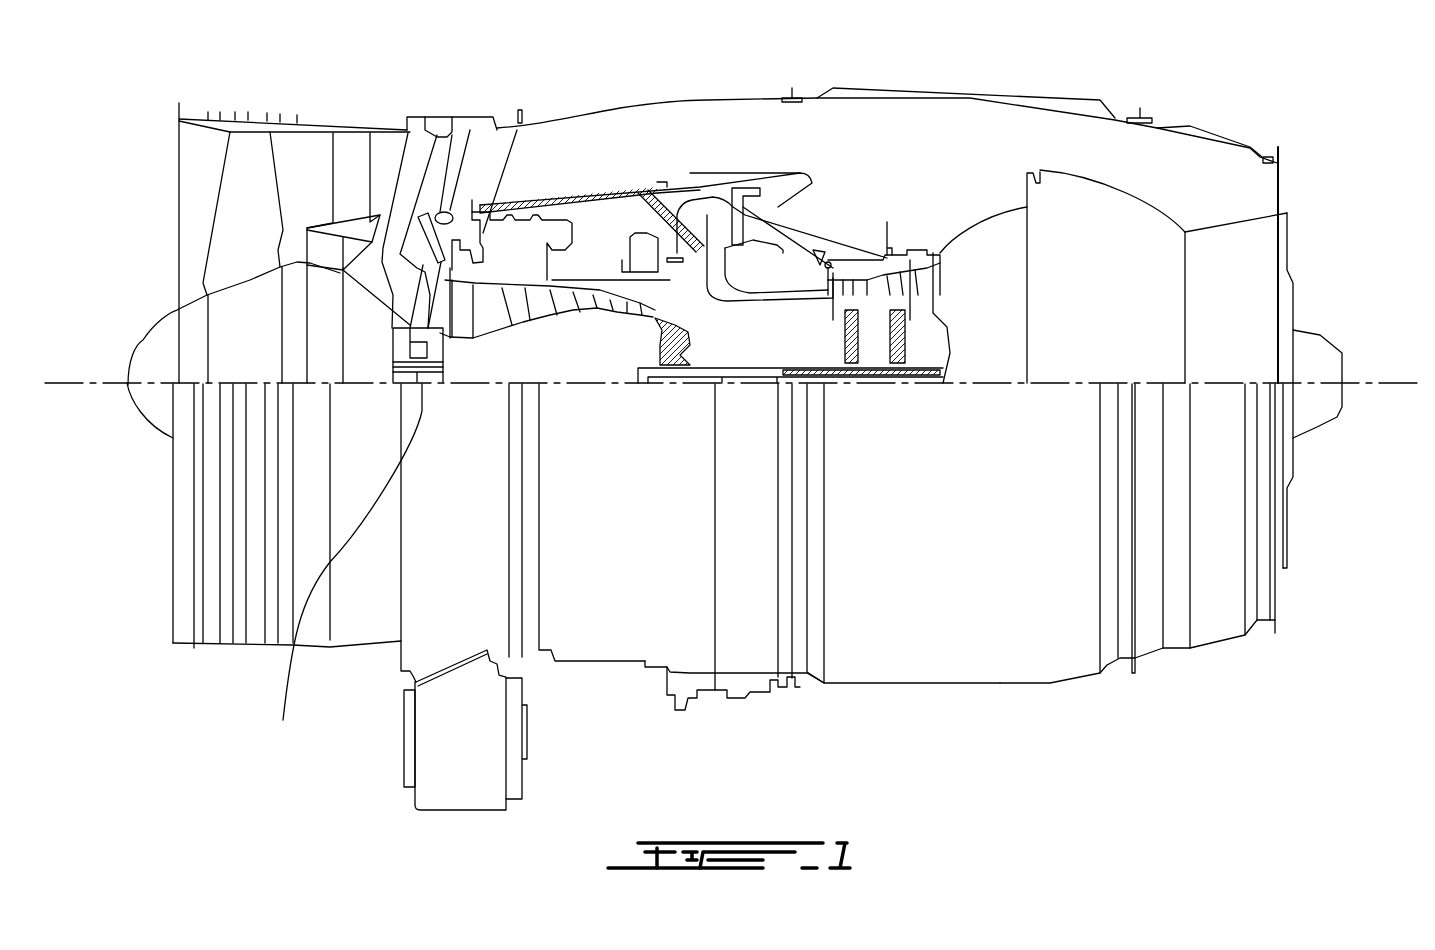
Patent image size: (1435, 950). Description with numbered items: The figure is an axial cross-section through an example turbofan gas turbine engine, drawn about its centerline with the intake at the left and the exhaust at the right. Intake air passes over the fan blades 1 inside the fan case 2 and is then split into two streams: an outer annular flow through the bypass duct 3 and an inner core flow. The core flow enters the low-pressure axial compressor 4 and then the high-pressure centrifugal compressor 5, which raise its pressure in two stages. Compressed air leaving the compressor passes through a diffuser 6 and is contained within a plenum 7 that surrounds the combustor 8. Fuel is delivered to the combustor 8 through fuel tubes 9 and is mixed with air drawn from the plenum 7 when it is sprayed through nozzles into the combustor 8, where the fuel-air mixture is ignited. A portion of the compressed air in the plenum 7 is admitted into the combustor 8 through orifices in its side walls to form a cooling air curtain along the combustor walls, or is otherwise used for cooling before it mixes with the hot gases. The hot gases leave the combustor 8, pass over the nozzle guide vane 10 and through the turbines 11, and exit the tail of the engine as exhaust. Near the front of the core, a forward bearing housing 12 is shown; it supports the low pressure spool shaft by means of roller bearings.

The fan blades 1 is at (256, 228).
The fan case 2 is at (312, 120).
The bypass duct 3 is at (594, 165).
The low-pressure axial compressor 4 is at (490, 322).
The high-pressure centrifugal compressor 5 is at (653, 313).
The diffuser 6 is at (710, 210).
The plenum 7 is at (785, 252).
The combustor 8 is at (772, 283).
The fuel tubes 9 is at (778, 197).
The nozzle guide vane 10 is at (847, 280).
The turbines 11 is at (860, 290).
The forward bearing housing 12 is at (455, 470).